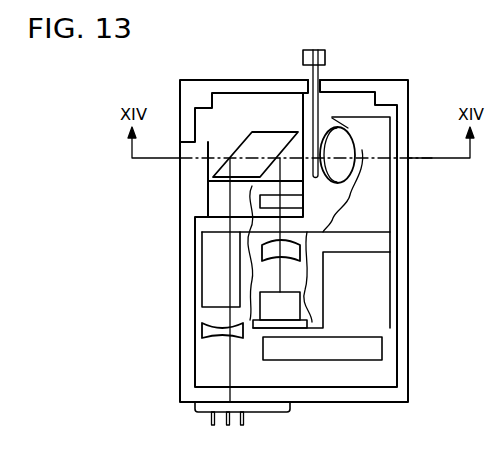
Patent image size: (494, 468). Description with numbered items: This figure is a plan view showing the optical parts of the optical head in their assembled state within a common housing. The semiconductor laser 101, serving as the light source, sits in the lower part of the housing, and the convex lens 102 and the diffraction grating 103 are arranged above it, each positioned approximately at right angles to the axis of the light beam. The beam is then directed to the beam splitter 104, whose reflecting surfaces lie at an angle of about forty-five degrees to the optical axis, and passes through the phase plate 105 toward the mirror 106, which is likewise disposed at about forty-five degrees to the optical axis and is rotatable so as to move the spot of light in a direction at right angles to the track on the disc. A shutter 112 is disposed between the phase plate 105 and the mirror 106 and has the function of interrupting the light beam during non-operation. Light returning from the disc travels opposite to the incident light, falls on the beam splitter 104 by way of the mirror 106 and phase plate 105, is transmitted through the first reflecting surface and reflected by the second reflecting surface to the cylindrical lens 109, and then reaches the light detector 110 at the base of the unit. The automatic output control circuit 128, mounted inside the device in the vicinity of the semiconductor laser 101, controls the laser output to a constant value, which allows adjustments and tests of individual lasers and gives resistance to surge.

The semiconductor laser 101 is at (293, 323).
The convex lens 102 is at (290, 255).
The diffraction grating 103 is at (300, 200).
The beam splitter 104 is at (267, 140).
The phase plate 105 is at (300, 97).
The mirror 106 is at (347, 147).
The cylindrical lens 109 is at (203, 327).
The light detector 110 is at (277, 405).
The shutter 112 is at (320, 73).
The automatic output control circuit 128 is at (373, 348).